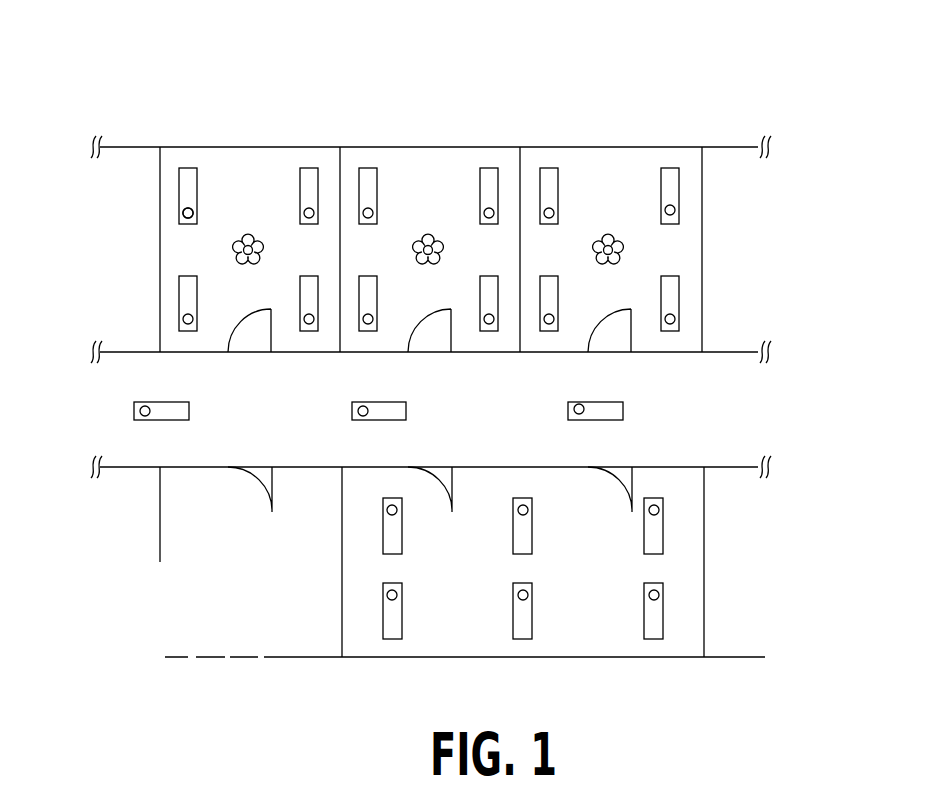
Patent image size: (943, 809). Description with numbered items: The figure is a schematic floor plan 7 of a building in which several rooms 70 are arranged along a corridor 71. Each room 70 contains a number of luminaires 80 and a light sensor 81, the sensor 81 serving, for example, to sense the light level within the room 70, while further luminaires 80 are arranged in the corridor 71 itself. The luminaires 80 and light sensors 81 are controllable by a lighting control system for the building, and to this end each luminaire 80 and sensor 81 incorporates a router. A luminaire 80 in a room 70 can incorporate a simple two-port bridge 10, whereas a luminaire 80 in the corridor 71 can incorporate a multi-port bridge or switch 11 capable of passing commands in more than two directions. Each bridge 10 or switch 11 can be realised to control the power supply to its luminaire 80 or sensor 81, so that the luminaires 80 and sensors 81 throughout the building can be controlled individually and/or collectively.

The floor plan 7 is at (724, 85).
The two-port bridge 10 is at (183, 212).
The switch 11 is at (143, 406).
The room 70 is at (277, 170).
The corridor 71 is at (718, 400).
The luminaire 80 is at (186, 167).
The light sensor 81 is at (248, 235).